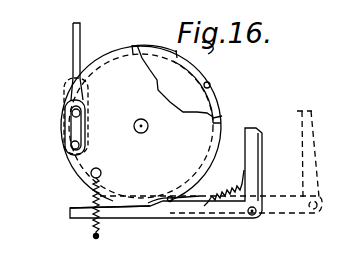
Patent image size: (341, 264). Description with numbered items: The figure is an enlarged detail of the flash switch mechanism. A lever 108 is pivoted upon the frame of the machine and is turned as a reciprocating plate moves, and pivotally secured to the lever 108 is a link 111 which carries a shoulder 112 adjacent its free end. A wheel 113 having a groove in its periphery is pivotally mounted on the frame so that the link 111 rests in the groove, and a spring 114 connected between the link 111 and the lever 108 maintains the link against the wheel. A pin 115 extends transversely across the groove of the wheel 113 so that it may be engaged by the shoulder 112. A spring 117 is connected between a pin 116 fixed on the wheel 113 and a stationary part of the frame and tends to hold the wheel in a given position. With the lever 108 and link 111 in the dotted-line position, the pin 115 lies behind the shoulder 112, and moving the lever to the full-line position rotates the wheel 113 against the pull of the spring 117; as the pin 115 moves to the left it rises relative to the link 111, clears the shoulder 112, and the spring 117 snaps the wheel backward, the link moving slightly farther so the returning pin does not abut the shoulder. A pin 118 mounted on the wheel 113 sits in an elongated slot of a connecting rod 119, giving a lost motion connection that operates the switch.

The lever 108 is at (250, 128).
The link 111 is at (230, 219).
The shoulder 112 is at (104, 218).
The wheel 113 is at (95, 63).
The spring 114 is at (232, 183).
The pin 115 is at (168, 200).
The pin 116 is at (101, 171).
The spring 117 is at (92, 198).
The pin 118 is at (67, 152).
The connecting rod 119 is at (73, 40).